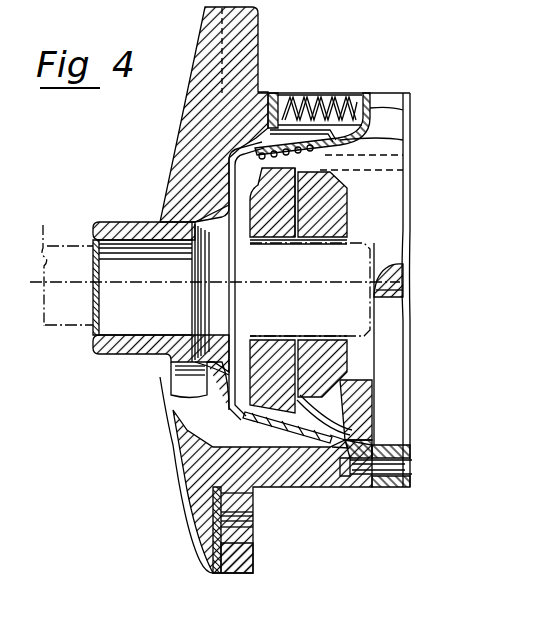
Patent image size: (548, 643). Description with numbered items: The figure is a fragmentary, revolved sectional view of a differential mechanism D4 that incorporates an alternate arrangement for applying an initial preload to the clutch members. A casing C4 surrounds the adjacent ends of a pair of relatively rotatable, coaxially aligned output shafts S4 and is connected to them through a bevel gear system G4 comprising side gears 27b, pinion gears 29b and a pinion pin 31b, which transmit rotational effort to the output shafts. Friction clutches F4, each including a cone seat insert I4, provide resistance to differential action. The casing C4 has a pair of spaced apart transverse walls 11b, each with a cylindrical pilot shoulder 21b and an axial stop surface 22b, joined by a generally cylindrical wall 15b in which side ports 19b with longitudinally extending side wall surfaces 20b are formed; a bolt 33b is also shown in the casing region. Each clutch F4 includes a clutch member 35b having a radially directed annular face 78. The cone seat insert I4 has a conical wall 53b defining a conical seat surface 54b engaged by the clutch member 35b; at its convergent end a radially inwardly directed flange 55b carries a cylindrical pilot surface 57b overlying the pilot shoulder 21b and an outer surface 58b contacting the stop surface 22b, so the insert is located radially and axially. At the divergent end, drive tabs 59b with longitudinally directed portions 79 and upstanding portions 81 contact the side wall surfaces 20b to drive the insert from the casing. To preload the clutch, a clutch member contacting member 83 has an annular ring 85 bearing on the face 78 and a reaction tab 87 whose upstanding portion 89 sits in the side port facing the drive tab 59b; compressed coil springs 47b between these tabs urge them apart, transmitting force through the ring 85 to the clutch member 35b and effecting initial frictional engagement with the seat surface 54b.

The transverse walls 11b is at (190, 200).
The cylindrical pilot surface 57b is at (158, 222).
The output shafts S4 is at (215, 267).
The cylindrical pilot shoulder 21b is at (200, 185).
The cone seat insert I4 is at (200, 398).
The cylindrical wall 15b is at (330, 487).
The casing C4 is at (210, 490).
The bolt 33b is at (412, 462).
The side wall surfaces 20b is at (388, 93).
The differential mechanism D4 is at (420, 90).
The pinion pin 31b is at (403, 347).
The clutch member contacting member 83 is at (270, 92).
The compressed coil springs 47b is at (330, 93).
The side ports 19b is at (280, 93).
The upstanding portion 89 is at (286, 112).
The drive tabs 59b is at (365, 93).
The axial stop surface 22b is at (225, 158).
The outer surface 58b is at (258, 160).
The reaction tab 87 is at (256, 130).
The side gears 27b is at (355, 228).
The clutch members 35b is at (348, 241).
The radially inwardly directed flange 55b is at (348, 205).
The conical wall 53b is at (403, 157).
The conical seat surface 54b is at (403, 172).
The upstanding portion 81 is at (403, 110).
The longitudinally directed portion 79 is at (403, 140).
The annular face 78 is at (314, 455).
The annular ring 85 is at (350, 428).
The bevel gear system G4 is at (330, 405).
The pinion gears 29b is at (366, 382).
The friction clutches F4 is at (215, 432).